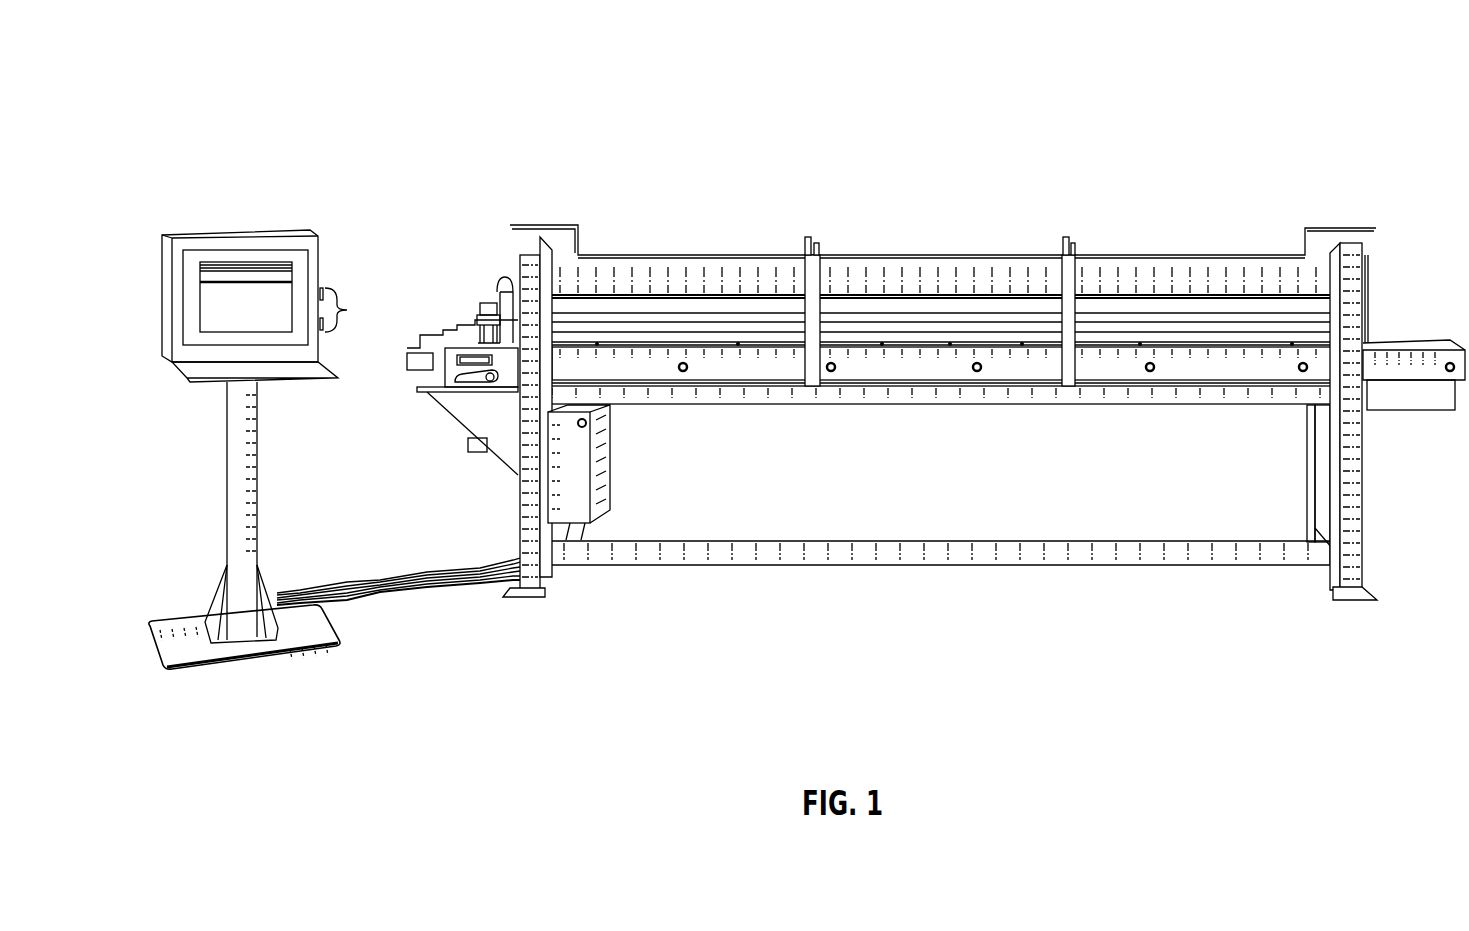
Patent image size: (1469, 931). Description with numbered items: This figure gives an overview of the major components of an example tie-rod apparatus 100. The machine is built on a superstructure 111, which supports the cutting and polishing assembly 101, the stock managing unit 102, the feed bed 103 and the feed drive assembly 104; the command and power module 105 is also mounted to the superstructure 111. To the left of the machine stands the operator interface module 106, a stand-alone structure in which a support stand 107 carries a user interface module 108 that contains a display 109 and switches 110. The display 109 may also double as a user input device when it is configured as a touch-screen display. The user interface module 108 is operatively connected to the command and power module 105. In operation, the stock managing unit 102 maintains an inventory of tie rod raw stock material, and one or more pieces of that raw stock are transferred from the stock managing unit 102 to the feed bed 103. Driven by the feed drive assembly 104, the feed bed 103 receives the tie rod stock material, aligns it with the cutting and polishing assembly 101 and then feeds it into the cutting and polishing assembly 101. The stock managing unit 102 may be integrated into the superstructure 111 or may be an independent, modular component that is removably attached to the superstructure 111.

The tie-rod apparatus 100 is at (245, 88).
The cutting and polishing assembly 101 is at (407, 345).
The stock managing unit 102 is at (1379, 228).
The feed bed 103 is at (1177, 345).
The feed drive assembly 104 is at (1465, 337).
The command and power module 105 is at (612, 452).
The operator interface module 106 is at (347, 650).
The support stand 107 is at (257, 497).
The user interface module 108 is at (249, 243).
The display 109 is at (208, 298).
The switches 110 is at (358, 310).
The superstructure 111 is at (1362, 495).